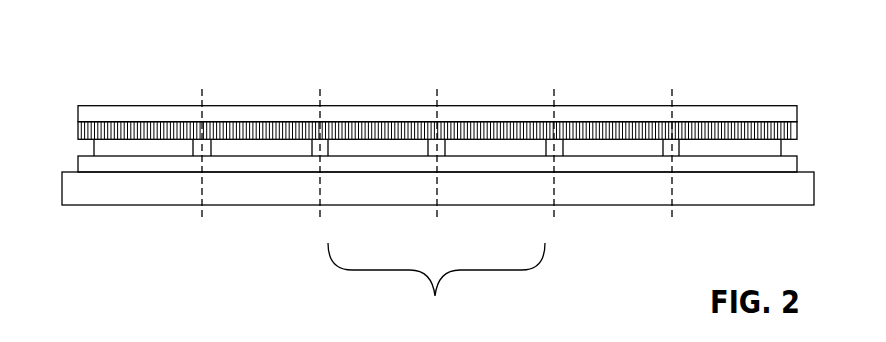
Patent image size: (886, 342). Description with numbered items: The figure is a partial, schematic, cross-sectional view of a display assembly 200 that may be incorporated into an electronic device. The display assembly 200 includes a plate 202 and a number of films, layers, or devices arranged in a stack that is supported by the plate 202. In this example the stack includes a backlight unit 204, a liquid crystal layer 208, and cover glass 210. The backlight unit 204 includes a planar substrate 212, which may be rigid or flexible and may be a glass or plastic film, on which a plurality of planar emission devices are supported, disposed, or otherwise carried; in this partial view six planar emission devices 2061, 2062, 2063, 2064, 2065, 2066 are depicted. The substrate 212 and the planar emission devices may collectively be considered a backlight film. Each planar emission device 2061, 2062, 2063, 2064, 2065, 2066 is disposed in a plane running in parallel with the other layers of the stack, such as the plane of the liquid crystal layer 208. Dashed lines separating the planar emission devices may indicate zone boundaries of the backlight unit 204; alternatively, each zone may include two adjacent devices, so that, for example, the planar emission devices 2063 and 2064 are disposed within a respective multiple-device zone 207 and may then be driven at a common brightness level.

The display assembly 200 is at (784, 48).
The plate 202 is at (814, 184).
The backlight unit 204 is at (810, 152).
The planar emission device 2061 is at (172, 143).
The planar emission device 2062 is at (288, 143).
The planar emission device 2063 is at (397, 143).
The planar emission device 2064 is at (520, 143).
The planar emission device 2065 is at (628, 143).
The planar emission device 2066 is at (752, 143).
The multiple-device zone 207 is at (436, 286).
The liquid crystal layer 208 is at (78, 130).
The cover glass 210 is at (96, 104).
The planar substrate 212 is at (78, 164).